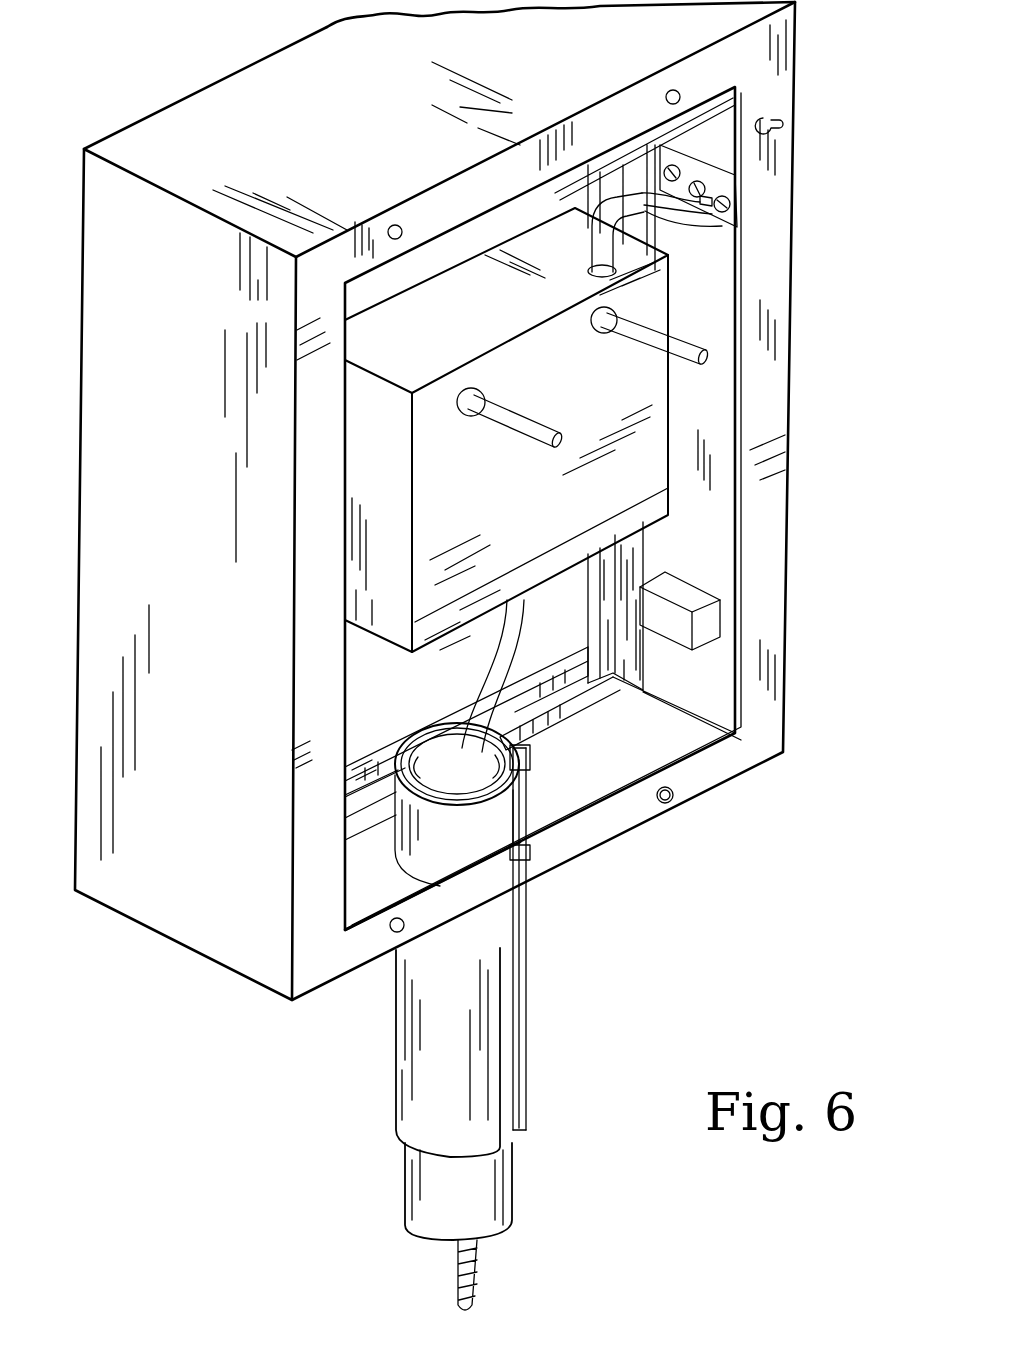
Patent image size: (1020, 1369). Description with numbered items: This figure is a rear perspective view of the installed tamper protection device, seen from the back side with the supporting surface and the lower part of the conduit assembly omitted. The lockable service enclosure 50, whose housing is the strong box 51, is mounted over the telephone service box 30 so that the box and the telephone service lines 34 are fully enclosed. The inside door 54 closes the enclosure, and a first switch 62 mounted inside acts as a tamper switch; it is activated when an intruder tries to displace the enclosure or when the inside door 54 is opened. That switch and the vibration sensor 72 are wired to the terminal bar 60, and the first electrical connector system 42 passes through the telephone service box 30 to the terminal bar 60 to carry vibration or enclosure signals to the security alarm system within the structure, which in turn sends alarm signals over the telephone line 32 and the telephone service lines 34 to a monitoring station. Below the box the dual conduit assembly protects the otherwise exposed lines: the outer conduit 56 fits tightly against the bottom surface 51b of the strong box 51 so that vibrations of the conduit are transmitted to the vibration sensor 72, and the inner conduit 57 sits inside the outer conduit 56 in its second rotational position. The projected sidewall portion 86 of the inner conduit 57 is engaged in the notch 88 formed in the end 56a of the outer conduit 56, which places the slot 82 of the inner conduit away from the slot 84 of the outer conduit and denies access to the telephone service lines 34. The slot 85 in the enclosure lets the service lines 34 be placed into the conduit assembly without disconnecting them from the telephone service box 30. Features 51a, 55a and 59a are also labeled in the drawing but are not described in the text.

The lockable service enclosure 50 is at (247, 50).
The strong box 51 is at (195, 950).
The bottom wall edge of housing 51a is at (407, 878).
The bottom surface 51b is at (388, 884).
The inside door 54 is at (402, 708).
The telephone service box 30 is at (672, 388).
The alarm service lines 32 is at (562, 428).
The first electrical connector system 42 is at (708, 345).
The terminal bar 60 is at (702, 230).
The first switch 62 is at (727, 153).
The vibration sensor 72 is at (720, 592).
The floor flange 55a is at (512, 737).
The telephone service lines 34 is at (512, 760).
The notch 88 is at (413, 767).
The end of the outer conduit 56a is at (478, 841).
The outer conduit 56 is at (525, 1027).
The inner conduit 57 is at (513, 1190).
The slot of the outer conduit 84 is at (503, 993).
The slot of the inner conduit 82 is at (530, 768).
The slot of the enclosure 85 is at (530, 856).
The projected sidewall portion 86 is at (668, 805).
The screw hole 59a is at (670, 801).